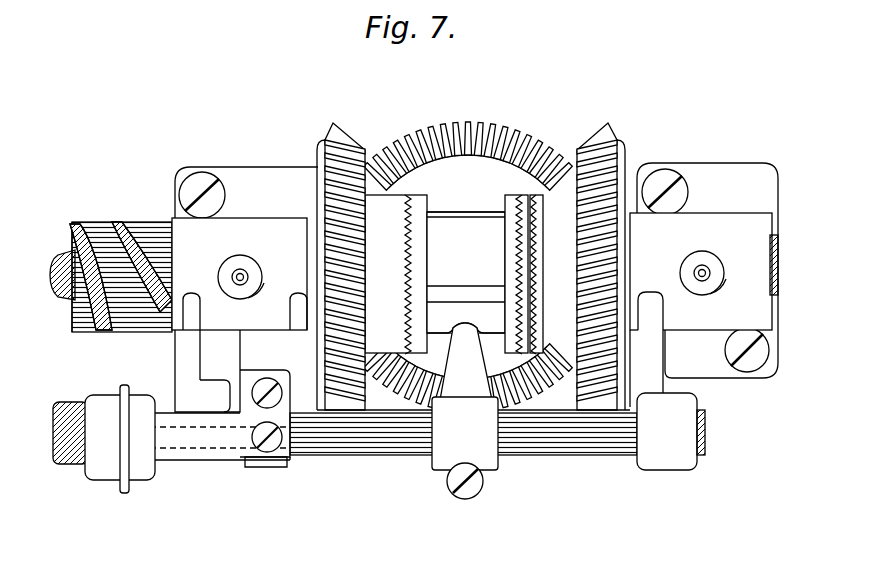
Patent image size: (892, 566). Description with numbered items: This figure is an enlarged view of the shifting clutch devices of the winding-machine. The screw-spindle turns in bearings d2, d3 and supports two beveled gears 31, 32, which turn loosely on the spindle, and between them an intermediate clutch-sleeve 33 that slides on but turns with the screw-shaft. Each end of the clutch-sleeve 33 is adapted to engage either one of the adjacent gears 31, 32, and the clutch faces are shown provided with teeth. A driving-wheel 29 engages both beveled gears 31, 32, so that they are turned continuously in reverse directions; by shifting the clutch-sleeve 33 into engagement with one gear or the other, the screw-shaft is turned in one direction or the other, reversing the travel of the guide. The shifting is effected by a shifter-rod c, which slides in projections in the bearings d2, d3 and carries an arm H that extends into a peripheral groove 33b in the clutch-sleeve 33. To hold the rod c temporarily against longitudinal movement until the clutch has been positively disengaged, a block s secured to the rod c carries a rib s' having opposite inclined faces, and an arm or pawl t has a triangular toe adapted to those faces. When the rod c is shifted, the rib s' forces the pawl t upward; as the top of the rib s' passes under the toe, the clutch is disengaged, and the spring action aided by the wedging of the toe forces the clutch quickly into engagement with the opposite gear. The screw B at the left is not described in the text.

The driving-wheel 29 is at (483, 130).
The beveled gear 31 is at (608, 125).
The beveled gear 32 is at (333, 128).
The clutch-sleeve 33 is at (454, 274).
The peripheral groove 33b is at (466, 201).
The arm H is at (466, 402).
The bearing d2 is at (245, 312).
The bearing d3 is at (704, 316).
The worm shaft B is at (109, 268).
The block s is at (104, 437).
The rib s' is at (129, 438).
The arm or pawl t is at (205, 440).
The shifter-rod c is at (380, 448).